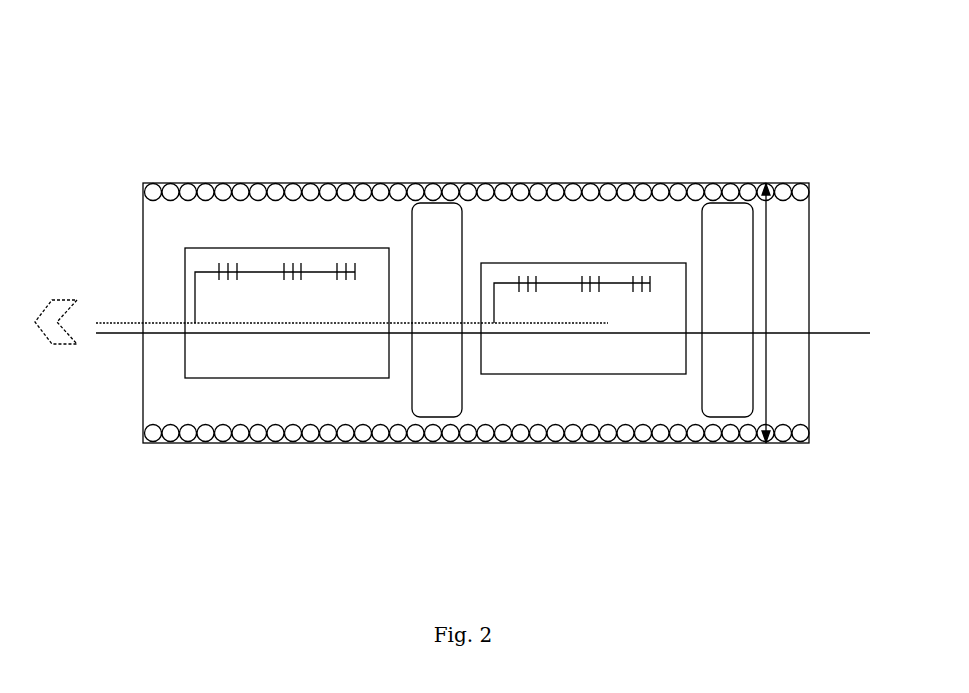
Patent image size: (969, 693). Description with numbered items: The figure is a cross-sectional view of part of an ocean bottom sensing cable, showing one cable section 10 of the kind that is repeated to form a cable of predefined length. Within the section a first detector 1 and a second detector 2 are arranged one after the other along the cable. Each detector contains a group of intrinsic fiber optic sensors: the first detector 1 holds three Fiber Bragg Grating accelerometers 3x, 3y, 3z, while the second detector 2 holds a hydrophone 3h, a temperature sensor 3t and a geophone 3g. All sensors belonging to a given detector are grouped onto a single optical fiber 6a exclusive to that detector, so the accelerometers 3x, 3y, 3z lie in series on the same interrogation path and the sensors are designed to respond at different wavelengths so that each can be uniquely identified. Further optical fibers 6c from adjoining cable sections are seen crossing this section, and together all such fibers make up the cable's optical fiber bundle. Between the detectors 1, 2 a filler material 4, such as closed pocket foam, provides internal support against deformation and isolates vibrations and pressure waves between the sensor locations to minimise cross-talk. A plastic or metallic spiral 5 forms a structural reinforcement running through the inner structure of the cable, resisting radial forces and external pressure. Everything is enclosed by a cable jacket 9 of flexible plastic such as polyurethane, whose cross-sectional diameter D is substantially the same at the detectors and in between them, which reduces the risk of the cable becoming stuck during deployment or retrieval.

The first detector 1 is at (194, 248).
The second detector 2 is at (546, 263).
The FBG accelerometer 3x is at (223, 280).
The FBG accelerometer 3y is at (285, 280).
The FBG accelerometer 3z is at (339, 280).
The FBG hydrophone 3h is at (521, 292).
The temperature sensor 3t is at (585, 292).
The FBG geophone 3g is at (639, 292).
The filler material 4 is at (440, 217).
The spiral 5 is at (785, 198).
The single optical fiber 6a is at (209, 323).
The optical fibers from adjoining cable sections 6c is at (316, 333).
The cable jacket 9 is at (660, 183).
The cable section 10 is at (583, 443).
The cross-sectional diameter D is at (776, 313).